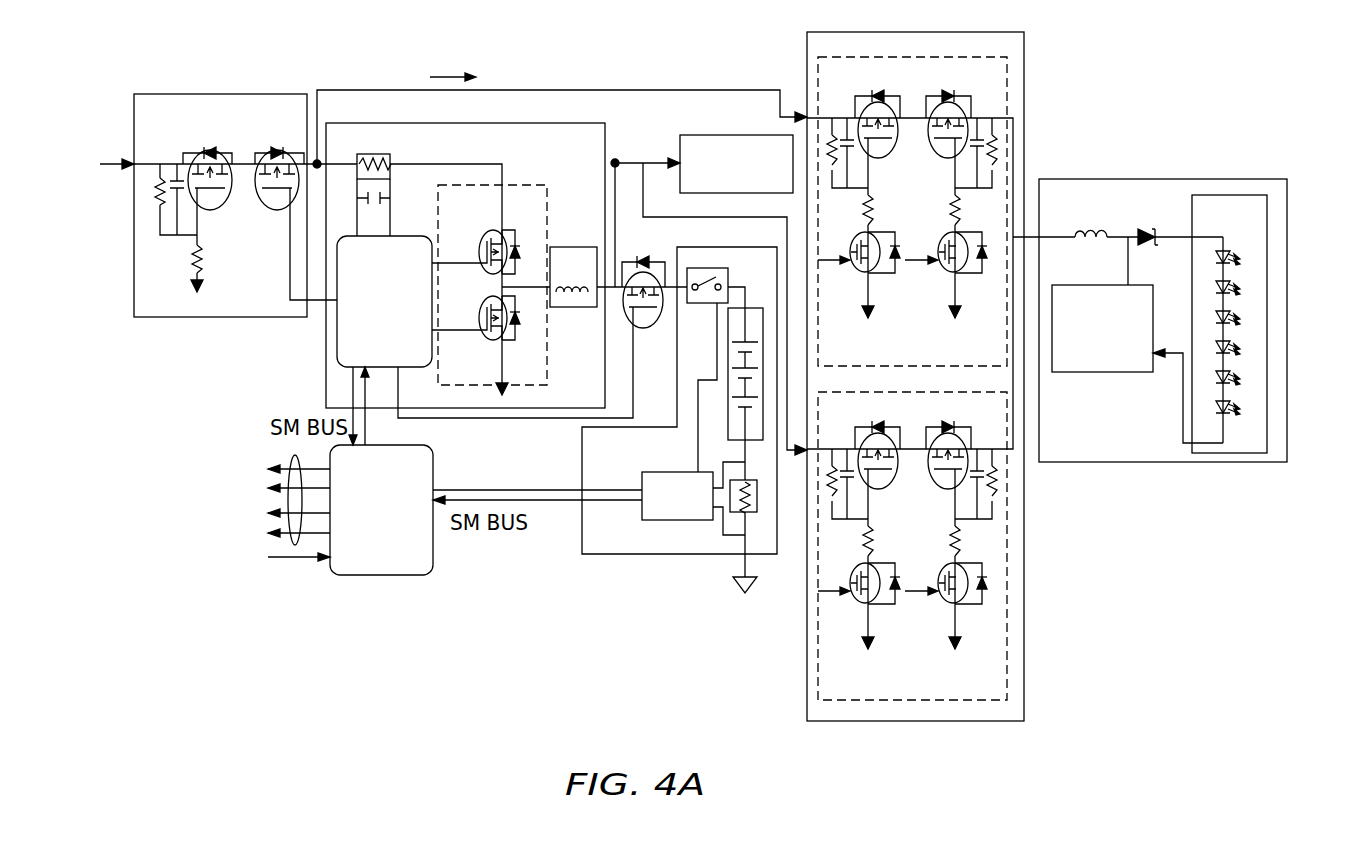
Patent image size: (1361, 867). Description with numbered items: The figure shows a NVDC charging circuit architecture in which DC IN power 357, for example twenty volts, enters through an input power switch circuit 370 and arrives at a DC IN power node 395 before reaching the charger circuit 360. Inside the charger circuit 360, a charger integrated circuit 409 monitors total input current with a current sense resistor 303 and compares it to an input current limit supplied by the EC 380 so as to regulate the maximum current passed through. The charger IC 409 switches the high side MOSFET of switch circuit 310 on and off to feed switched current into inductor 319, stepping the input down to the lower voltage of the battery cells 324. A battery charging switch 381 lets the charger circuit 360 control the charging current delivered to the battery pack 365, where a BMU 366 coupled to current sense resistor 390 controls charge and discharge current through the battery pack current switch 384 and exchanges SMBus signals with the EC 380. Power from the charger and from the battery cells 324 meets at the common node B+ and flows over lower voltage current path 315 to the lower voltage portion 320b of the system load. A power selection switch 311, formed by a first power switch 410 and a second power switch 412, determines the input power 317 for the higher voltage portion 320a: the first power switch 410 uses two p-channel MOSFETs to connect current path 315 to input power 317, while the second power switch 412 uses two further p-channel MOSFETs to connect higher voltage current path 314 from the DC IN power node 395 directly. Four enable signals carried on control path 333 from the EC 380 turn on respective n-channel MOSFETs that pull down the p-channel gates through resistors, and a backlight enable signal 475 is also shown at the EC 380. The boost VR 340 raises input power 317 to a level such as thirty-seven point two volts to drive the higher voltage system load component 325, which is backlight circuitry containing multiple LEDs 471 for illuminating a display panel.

The input power switch circuit 370 is at (177, 94).
The DC IN power 357 is at (115, 172).
The DC IN power node 395 is at (302, 200).
The current sense resistor 303 is at (372, 155).
The charger integrated circuit 409 is at (398, 236).
The charger circuit 360 is at (517, 123).
The switch circuit 310 is at (522, 186).
The inductor 319 is at (562, 247).
The higher voltage current path 314 is at (595, 90).
The lower voltage portion of system load 320b is at (760, 135).
The lower voltage current path 315 is at (616, 215).
The battery cells 324 is at (745, 308).
The battery pack current switch 384 is at (705, 303).
The battery charging switch 381 is at (648, 327).
The second power switch 412 is at (807, 72).
The power selection switch 311 is at (1025, 58).
The input power 317 is at (1031, 236).
The higher voltage portion of system load 320a is at (1118, 179).
The higher voltage system load component 325 is at (1248, 195).
The backlight light-emitting diodes 471 is at (1252, 276).
The boost VR 340 is at (1093, 373).
The battery pack 365 is at (582, 470).
The BMU 366 is at (713, 520).
The current sense resistor 390 is at (757, 505).
The control path 333 is at (293, 460).
The BL_EN signal 475 is at (290, 560).
The EC 380 is at (435, 545).
The first power switch 410 is at (818, 630).